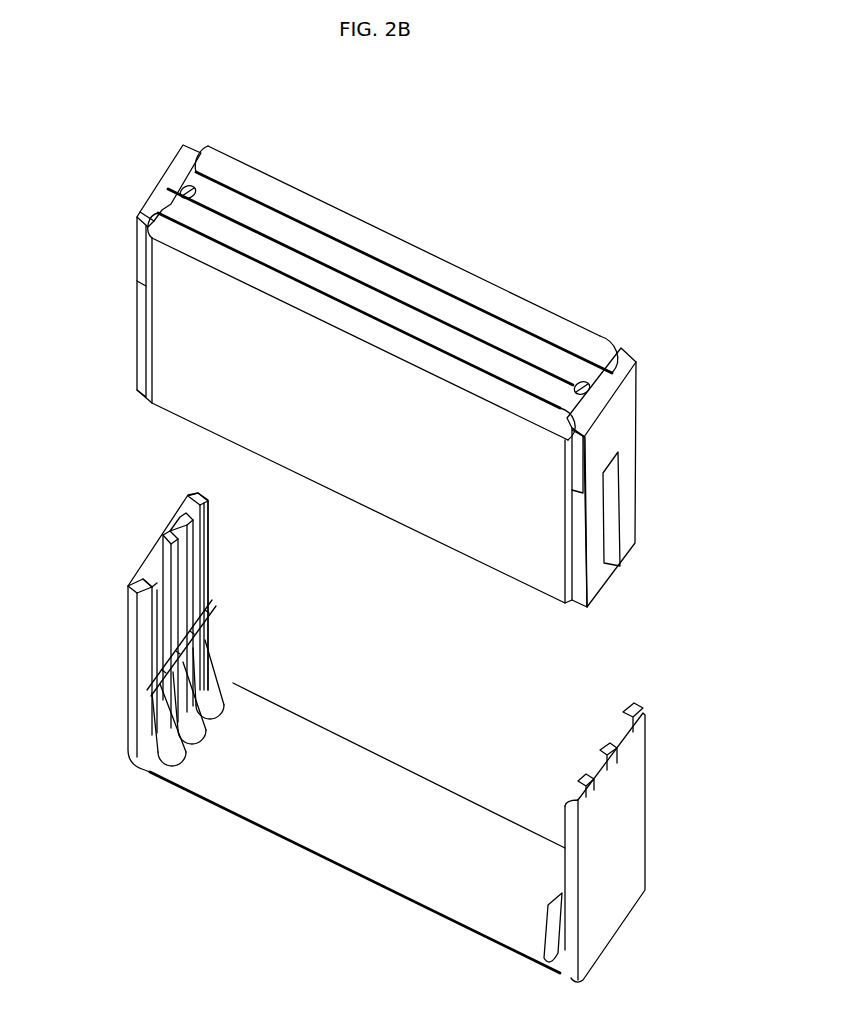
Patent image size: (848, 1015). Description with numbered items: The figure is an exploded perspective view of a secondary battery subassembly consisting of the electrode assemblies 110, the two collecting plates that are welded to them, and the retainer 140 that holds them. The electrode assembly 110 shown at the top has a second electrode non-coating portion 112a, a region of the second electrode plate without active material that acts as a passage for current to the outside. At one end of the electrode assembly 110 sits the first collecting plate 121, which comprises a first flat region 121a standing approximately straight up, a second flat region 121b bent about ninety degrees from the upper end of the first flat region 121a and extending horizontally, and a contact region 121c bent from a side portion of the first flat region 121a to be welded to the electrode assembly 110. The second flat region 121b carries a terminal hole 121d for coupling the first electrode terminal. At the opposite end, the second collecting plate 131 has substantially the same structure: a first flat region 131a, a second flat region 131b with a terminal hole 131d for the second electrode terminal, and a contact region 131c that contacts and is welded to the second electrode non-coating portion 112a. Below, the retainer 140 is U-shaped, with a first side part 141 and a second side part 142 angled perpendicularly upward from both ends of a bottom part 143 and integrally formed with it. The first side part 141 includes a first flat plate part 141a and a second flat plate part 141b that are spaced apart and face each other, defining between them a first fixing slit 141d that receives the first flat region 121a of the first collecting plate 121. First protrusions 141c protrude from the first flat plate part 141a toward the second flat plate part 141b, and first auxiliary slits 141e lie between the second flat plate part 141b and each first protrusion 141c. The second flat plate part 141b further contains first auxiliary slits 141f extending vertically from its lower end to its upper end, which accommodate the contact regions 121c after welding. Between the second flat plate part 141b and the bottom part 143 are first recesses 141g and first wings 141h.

The electrode assembly 110 is at (457, 273).
The second electrode non-coating portion 112a is at (606, 570).
The first collecting plate 121 is at (121, 250).
The first flat region 121a is at (145, 254).
The second flat region 121b is at (150, 213).
The contact region 121c is at (145, 345).
The terminal hole 121d is at (189, 186).
The second collecting plate 131 is at (642, 472).
The first flat region 131a is at (628, 400).
The second flat region 131b is at (625, 365).
The contact region 131c is at (580, 600).
The terminal hole 131d is at (581, 381).
The retainer 140 is at (376, 715).
The first side part 141 is at (177, 610).
The first flat plate part 141a is at (152, 568).
The second flat plate part 141b is at (170, 548).
The first protrusion 141c is at (138, 587).
The first fixing slit 141d is at (176, 530).
The first auxiliary slit 141e is at (194, 492).
The first auxiliary slit 141f is at (188, 568).
The first recess 141g is at (223, 683).
The first wing 141h is at (208, 655).
The second side part 142 is at (638, 827).
The bottom part 143 is at (336, 843).